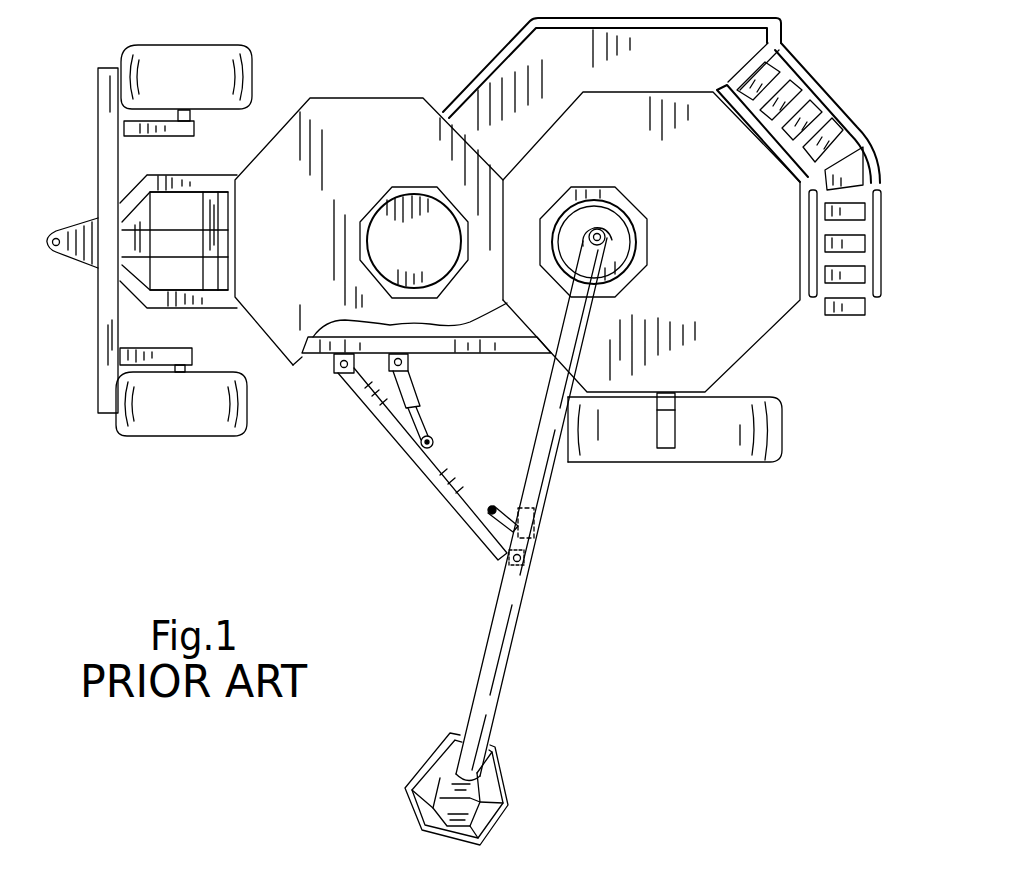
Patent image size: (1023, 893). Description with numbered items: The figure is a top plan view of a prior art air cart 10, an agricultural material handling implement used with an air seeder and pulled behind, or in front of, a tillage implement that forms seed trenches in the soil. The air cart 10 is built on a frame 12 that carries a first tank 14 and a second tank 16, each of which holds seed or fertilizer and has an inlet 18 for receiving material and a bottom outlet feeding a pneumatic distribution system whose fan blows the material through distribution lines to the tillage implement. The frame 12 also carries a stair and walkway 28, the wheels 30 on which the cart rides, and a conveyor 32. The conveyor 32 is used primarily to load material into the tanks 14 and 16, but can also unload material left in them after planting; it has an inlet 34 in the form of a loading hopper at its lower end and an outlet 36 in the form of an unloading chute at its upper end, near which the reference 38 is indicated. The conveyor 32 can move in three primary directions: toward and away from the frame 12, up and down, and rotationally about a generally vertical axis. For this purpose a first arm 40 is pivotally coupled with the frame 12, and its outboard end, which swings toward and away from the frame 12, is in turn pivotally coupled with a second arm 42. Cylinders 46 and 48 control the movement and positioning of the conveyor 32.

The air cart 10 is at (851, 506).
The frame 12 is at (478, 350).
The first tank 14 is at (742, 261).
The second tank 16 is at (308, 247).
The inlet 18 is at (428, 259).
The stair and walkway 28 is at (882, 213).
The wheels 30 is at (240, 60).
The conveyor 32 is at (502, 685).
The inlet 34 is at (405, 813).
The outlet 36 is at (630, 258).
The shaft 38 is at (607, 228).
The first arm 40 is at (385, 418).
The second arm 42 is at (538, 528).
The cylinder 46 is at (412, 380).
The cylinder 48 is at (500, 505).